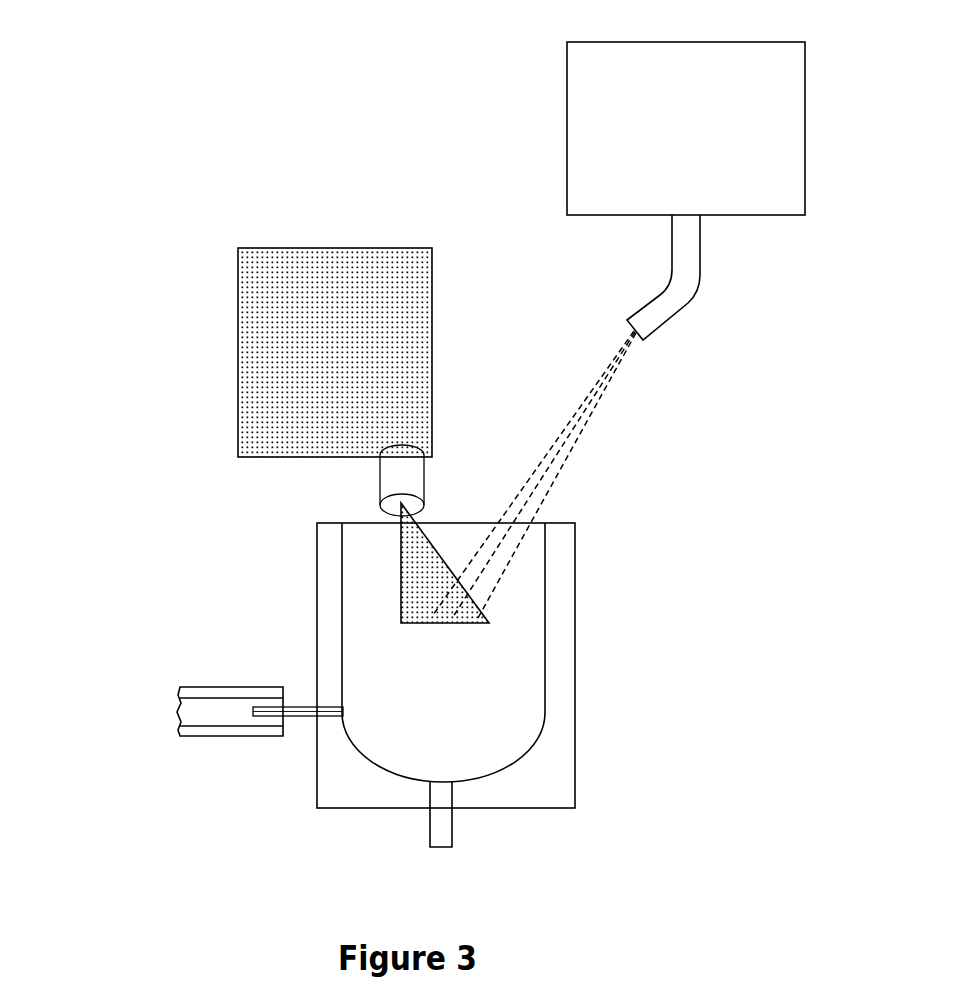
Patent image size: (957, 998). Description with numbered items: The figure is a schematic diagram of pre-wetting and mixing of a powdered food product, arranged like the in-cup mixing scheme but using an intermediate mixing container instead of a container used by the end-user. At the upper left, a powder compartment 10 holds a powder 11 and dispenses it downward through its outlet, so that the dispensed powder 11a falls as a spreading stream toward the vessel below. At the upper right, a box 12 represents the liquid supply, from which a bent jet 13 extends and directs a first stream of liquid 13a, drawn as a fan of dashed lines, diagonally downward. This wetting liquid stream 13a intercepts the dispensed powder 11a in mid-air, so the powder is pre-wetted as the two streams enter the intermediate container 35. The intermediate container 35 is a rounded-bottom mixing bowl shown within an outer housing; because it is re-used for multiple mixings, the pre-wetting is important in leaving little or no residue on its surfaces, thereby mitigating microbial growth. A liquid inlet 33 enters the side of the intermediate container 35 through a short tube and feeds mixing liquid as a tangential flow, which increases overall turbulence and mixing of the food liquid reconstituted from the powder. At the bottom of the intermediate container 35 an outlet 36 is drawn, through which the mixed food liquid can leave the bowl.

The powder compartment 10 is at (238, 384).
The powder 11 is at (283, 315).
The dispensed powder 11a is at (402, 575).
The energy source 12 is at (572, 78).
The jet 13 is at (700, 268).
The first stream of liquid 13a is at (580, 425).
The liquid inlet 33 is at (242, 686).
The intermediate container 35 is at (575, 532).
The outlet 36 is at (452, 835).